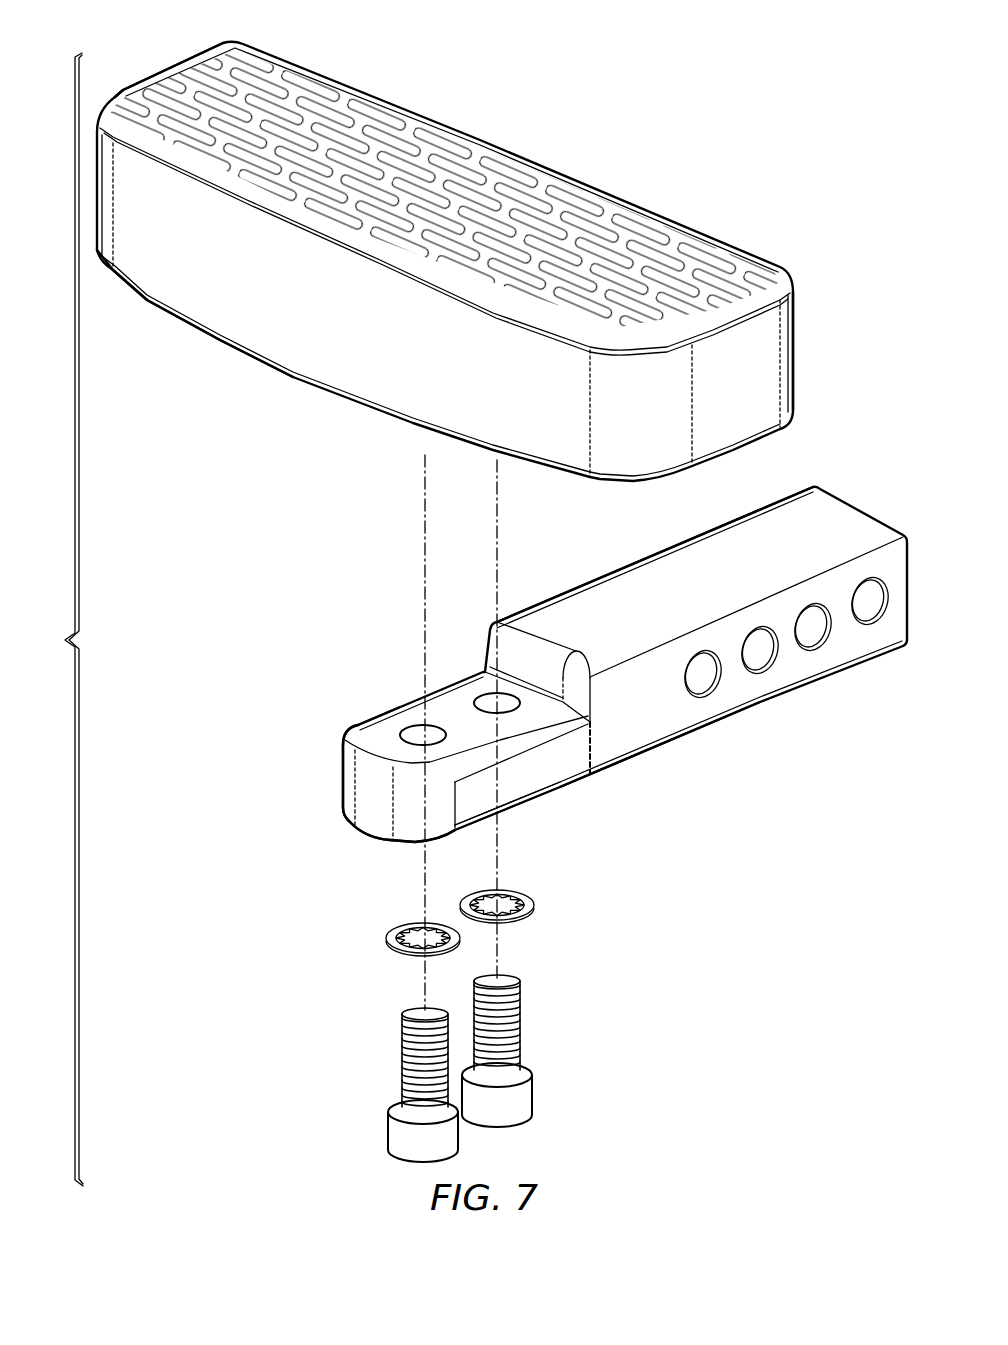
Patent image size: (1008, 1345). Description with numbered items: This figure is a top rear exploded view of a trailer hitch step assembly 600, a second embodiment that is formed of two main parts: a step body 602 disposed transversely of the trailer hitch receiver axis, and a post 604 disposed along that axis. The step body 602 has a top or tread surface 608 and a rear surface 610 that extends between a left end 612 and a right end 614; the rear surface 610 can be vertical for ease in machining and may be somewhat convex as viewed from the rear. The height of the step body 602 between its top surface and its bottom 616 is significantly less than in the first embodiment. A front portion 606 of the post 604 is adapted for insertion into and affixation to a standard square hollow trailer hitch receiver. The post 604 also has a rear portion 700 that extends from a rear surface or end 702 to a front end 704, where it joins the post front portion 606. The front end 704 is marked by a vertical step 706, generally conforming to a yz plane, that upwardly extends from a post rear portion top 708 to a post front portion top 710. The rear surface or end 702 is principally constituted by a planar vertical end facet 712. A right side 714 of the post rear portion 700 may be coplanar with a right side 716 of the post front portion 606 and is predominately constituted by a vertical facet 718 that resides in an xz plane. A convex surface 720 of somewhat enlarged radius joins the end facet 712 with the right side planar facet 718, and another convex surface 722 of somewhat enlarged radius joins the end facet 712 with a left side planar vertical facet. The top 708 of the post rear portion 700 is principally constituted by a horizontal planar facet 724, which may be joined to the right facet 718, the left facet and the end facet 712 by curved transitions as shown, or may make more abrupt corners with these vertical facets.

The trailer hitch step assembly 600 is at (51, 619).
The step body 602 is at (513, 150).
The post 604 is at (603, 570).
The front portion 606 is at (860, 523).
The top or tread surface 608 is at (427, 153).
The rear surface 610 is at (240, 318).
The left end 612 is at (167, 68).
The right end 614 is at (770, 377).
The bottom 616 is at (300, 382).
The rear portion 700 is at (480, 810).
The rear surface or end 702 is at (367, 800).
The front end 704 is at (591, 750).
The vertical step 706 is at (498, 660).
The post rear portion top 708 is at (397, 720).
The post front portion top 710 is at (817, 510).
The planar vertical end facet 712 is at (373, 807).
The right side 714 is at (547, 783).
The right side 716 is at (782, 677).
The vertical facet 718 is at (503, 800).
The convex surface 720 is at (417, 823).
The convex surface 722 is at (347, 780).
The horizontal planar facet 724 is at (373, 727).